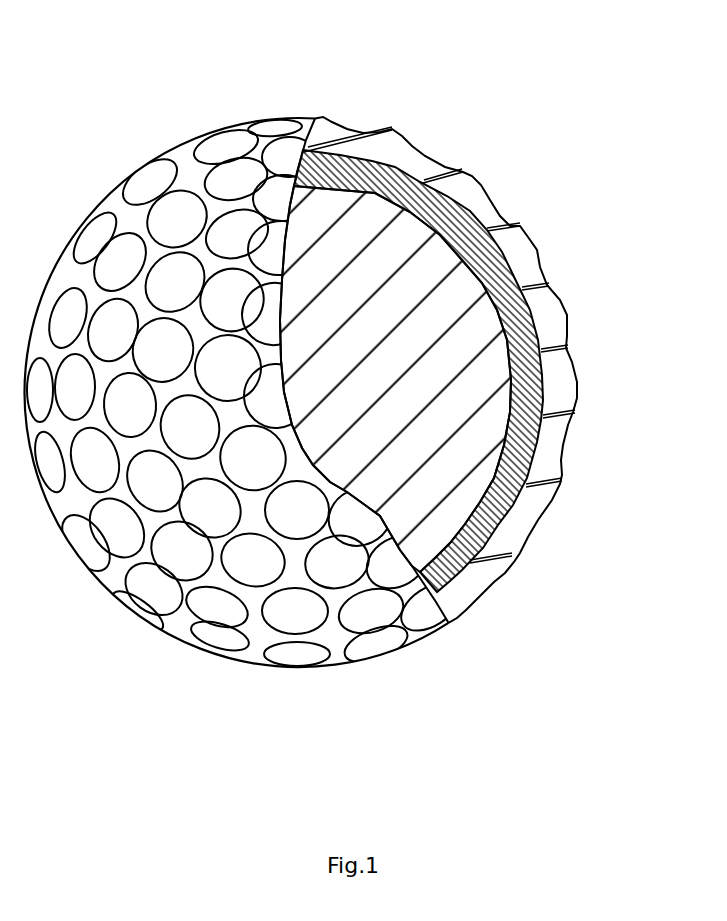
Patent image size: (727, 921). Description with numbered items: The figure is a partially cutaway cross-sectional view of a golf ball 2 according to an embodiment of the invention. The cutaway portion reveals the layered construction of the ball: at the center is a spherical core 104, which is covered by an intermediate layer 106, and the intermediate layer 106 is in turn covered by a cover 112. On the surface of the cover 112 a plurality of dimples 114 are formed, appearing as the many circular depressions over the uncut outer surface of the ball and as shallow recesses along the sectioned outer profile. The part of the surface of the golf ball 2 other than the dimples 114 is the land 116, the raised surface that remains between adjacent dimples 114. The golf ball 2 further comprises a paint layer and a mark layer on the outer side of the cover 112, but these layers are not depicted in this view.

The golf ball 2 is at (498, 196).
The spherical core 104 is at (463, 285).
The intermediate layer 106 is at (524, 296).
The cover 112 is at (517, 538).
The dimples 114 is at (338, 123).
The land 116 is at (388, 133).